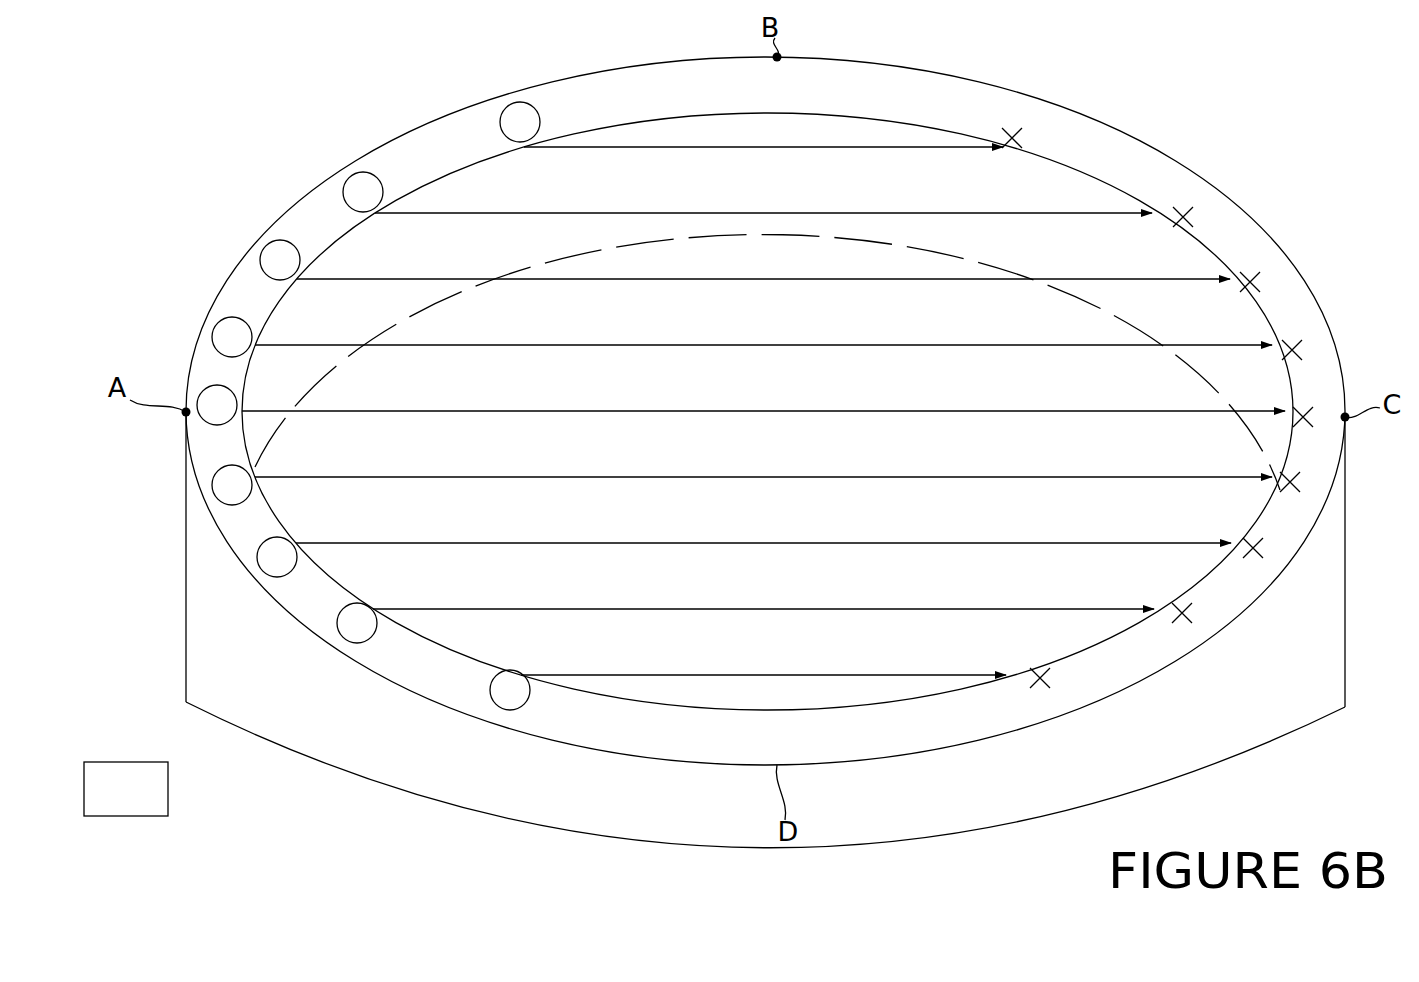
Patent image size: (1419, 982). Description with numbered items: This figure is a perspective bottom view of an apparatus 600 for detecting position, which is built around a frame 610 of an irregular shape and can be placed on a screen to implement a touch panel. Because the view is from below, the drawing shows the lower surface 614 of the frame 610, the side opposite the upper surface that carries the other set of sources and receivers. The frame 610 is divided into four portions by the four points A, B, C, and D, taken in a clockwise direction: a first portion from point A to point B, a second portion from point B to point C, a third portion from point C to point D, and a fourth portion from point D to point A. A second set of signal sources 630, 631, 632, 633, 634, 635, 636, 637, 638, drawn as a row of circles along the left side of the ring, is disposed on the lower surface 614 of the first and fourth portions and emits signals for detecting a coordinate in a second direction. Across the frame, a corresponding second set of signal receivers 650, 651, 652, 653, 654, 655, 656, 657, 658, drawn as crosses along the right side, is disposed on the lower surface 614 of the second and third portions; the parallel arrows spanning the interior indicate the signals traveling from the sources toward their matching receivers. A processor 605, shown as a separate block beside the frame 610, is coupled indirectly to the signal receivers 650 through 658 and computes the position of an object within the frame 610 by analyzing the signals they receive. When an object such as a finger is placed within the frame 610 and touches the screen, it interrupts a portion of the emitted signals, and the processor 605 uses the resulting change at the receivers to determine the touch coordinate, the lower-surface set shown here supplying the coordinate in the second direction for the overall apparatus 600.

The apparatus for detecting position 600 is at (137, 861).
The processor 605 is at (118, 762).
The frame 610 is at (1175, 748).
The lower surface 614 is at (940, 95).
The signal source 630 is at (520, 102).
The signal source 631 is at (362, 172).
The signal source 632 is at (278, 240).
The signal source 633 is at (225, 318).
The signal source 634 is at (186, 408).
The signal source 635 is at (214, 490).
The signal source 636 is at (258, 560).
The signal source 637 is at (338, 628).
The signal source 638 is at (490, 700).
The signal receiver 650 is at (1018, 132).
The signal receiver 651 is at (1190, 210).
The signal receiver 652 is at (1258, 275).
The signal receiver 653 is at (1300, 342).
The signal receiver 654 is at (1312, 412).
The signal receiver 655 is at (1298, 476).
The signal receiver 656 is at (1264, 548).
The signal receiver 657 is at (1194, 612).
The signal receiver 658 is at (1052, 676).